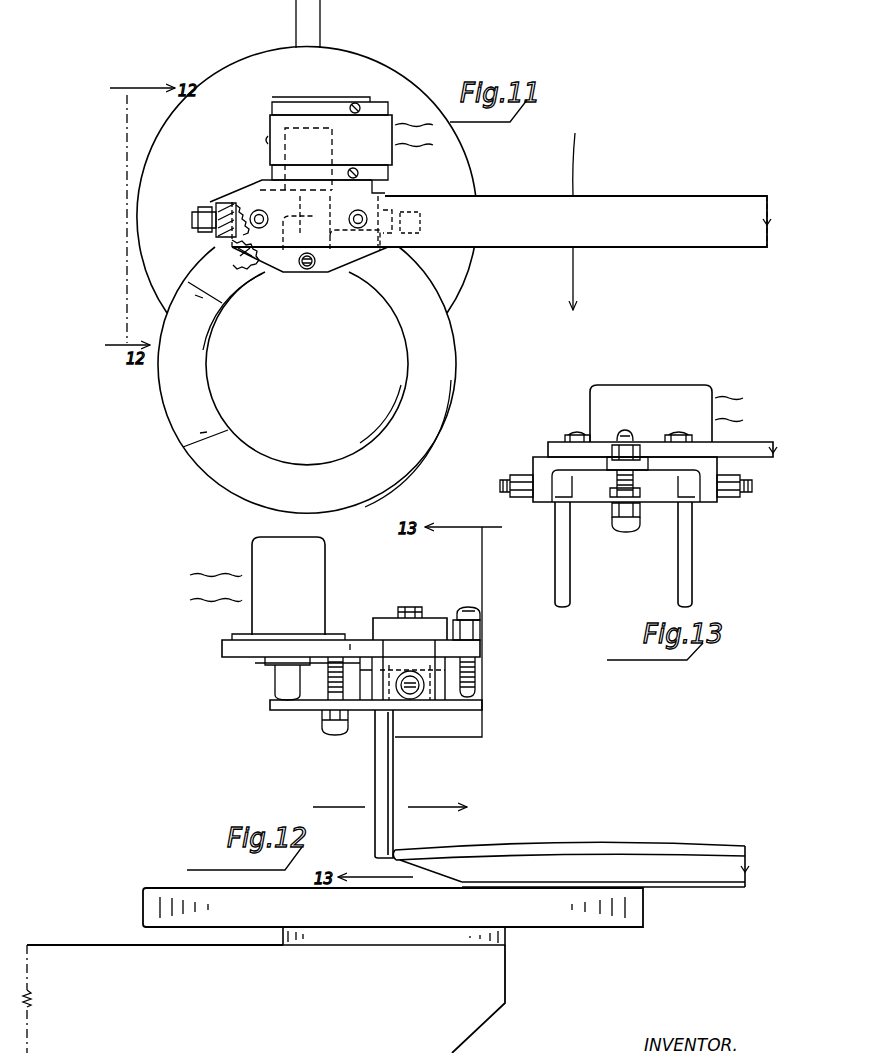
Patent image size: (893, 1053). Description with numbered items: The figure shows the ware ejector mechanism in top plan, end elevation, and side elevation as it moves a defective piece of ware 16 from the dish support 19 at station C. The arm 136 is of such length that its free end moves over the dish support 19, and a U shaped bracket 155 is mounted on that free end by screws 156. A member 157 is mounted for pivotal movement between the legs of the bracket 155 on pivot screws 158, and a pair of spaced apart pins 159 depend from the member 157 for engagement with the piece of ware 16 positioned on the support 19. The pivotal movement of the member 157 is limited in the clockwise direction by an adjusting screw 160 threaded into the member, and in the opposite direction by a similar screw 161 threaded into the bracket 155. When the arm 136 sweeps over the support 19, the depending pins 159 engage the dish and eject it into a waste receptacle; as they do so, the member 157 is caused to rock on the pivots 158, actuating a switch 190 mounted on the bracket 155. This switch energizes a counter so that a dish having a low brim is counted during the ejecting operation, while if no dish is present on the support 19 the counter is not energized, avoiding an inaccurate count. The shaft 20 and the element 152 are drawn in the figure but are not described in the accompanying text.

In FIG. 11, the shaft 20 is at (321, 18).
In FIG. 12, the shaft 20 is at (264, 990).
In FIG. 11, the dish support 19 is at (306, 179).
In FIG. 12, the dish support 19 is at (393, 907).
In FIG. 11, the piece of ware 16 is at (307, 380).
In FIG. 12, the piece of ware 16 is at (571, 864).
In FIG. 11, the switch 190 is at (346, 145).
In FIG. 12, the switch 190 is at (267, 588).
In FIG. 13, the switch 190 is at (693, 388).
In FIG. 11, the arm 136 is at (501, 221).
In FIG. 12, the arm 136 is at (433, 618).
In FIG. 13, the arm 136 is at (730, 447).
In FIG. 11, the U shaped bracket 155 is at (348, 256).
In FIG. 12, the U shaped bracket 155 is at (479, 656).
In FIG. 13, the U shaped bracket 155 is at (717, 470).
In FIG. 11, the screws 156 is at (268, 216).
In FIG. 12, the screws 156 is at (416, 606).
In FIG. 13, the screws 156 is at (580, 432).
In FIG. 11, the pivot screws 158 is at (192, 220).
In FIG. 12, the pivot screws 158 is at (428, 668).
In FIG. 13, the pivot screws 158 is at (508, 490).
In FIG. 11, the adjusting screw 161 is at (310, 270).
In FIG. 12, the adjusting screw 161 is at (477, 681).
In FIG. 13, the adjusting screw 161 is at (632, 432).
In FIG. 11, the gear 152 is at (243, 256).
In FIG. 12, the member 157 is at (445, 720).
In FIG. 13, the member 157 is at (648, 506).
In FIG. 12, the pins 159 is at (392, 789).
In FIG. 13, the pins 159 is at (571, 587).
In FIG. 12, the adjusting screw 160 is at (327, 728).
In FIG. 13, the adjusting screw 160 is at (632, 530).